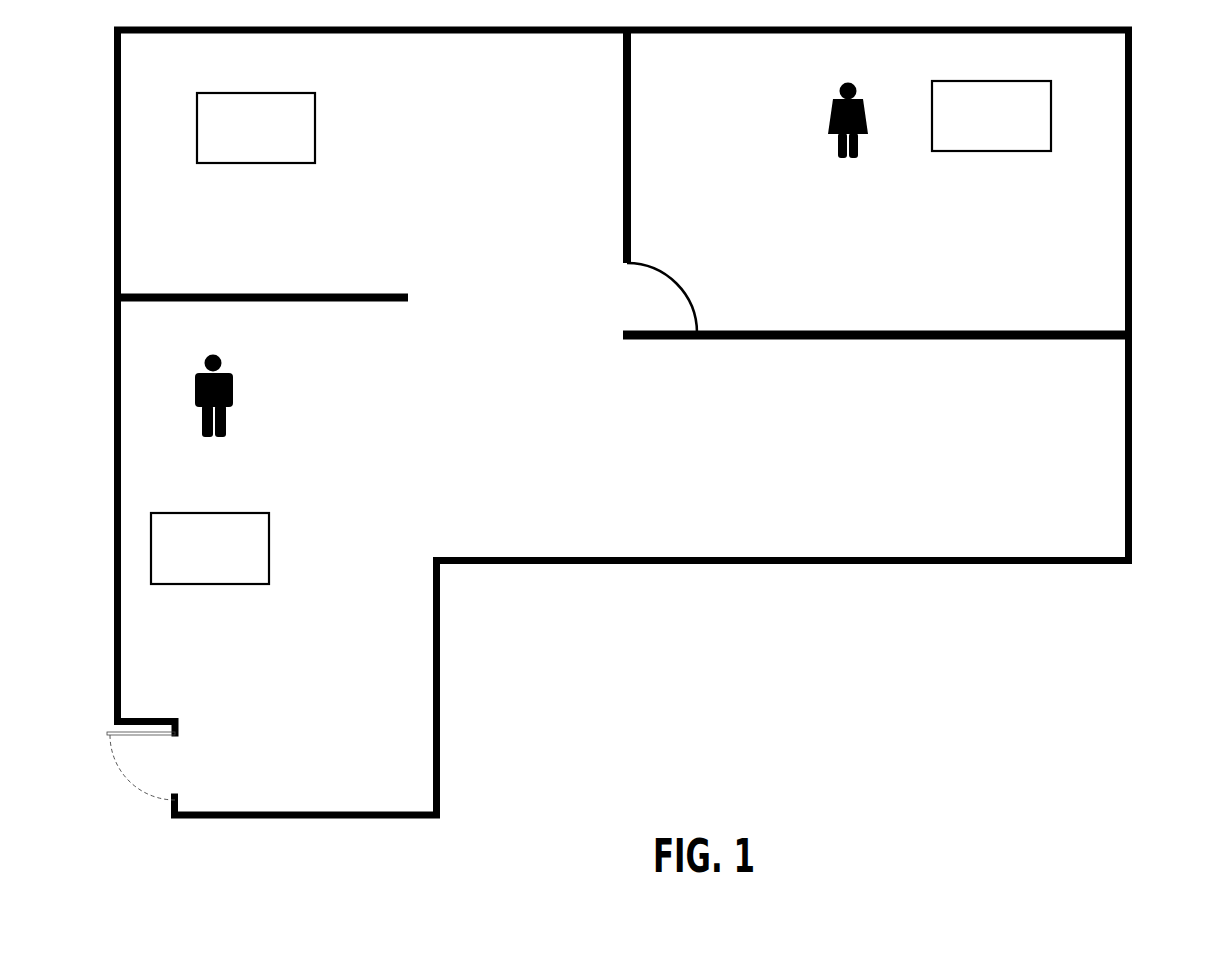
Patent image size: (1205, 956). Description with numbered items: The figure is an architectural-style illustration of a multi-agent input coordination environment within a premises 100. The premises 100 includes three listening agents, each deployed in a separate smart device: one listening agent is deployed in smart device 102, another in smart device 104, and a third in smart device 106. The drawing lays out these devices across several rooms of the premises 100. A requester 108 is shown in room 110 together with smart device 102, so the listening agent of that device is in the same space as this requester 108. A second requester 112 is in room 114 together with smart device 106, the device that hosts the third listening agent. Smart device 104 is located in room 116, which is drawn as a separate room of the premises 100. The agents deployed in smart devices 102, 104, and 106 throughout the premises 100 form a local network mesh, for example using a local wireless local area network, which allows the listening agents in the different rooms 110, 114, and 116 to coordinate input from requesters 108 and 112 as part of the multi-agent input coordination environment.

The premises 100 is at (868, 563).
The smart device 102 is at (243, 585).
The smart device 104 is at (316, 102).
The smart device 106 is at (1014, 152).
The requester 108 is at (233, 399).
The room 110 is at (577, 432).
The requester 112 is at (830, 123).
The room 114 is at (935, 312).
The room 116 is at (404, 254).